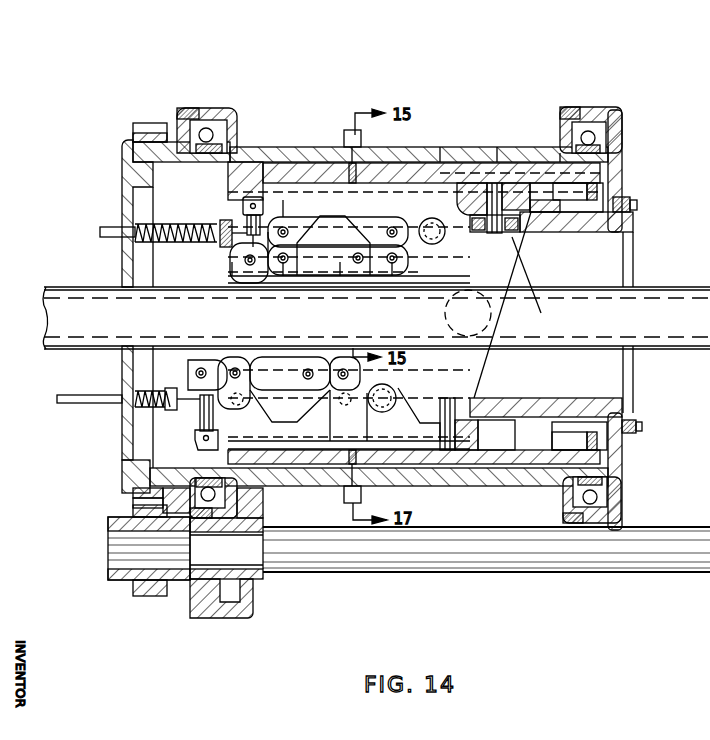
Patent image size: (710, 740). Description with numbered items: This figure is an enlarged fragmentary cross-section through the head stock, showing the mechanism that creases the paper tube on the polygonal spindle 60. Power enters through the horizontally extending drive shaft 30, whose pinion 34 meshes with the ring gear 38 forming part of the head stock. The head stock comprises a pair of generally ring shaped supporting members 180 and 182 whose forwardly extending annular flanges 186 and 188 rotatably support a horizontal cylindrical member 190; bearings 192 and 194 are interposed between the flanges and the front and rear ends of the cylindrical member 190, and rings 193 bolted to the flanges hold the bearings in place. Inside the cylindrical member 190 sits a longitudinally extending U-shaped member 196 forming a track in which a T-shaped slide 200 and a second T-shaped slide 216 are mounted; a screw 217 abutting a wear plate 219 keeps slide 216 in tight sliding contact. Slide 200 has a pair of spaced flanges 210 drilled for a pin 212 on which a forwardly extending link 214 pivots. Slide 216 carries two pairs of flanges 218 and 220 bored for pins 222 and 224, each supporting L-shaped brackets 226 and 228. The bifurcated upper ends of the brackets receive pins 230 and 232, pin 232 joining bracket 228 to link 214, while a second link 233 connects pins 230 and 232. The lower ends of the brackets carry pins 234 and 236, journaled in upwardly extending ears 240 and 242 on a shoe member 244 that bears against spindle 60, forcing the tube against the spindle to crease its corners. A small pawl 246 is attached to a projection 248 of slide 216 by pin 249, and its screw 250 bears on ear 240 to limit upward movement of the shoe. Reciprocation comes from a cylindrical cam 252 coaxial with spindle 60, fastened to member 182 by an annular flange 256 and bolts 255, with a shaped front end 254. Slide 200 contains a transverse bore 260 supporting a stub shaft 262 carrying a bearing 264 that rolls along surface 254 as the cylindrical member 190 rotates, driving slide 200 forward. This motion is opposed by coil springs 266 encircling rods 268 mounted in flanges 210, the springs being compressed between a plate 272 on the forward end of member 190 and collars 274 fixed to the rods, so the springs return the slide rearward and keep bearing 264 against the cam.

The drive shaft 30 is at (658, 536).
The pinion 34 is at (150, 600).
The ring gear 38 is at (140, 130).
The spindle 60 is at (637, 290).
The supporting member 180 is at (245, 150).
The supporting member 182 is at (622, 176).
The annular flange 186 is at (205, 118).
The annular flange 188 is at (604, 110).
The cylindrical member 190 is at (416, 148).
The bearing 192 is at (226, 108).
The rings 193 is at (172, 124).
The bearing 194 is at (622, 121).
The U-shaped member 196 is at (498, 150).
The T-shaped slide 200 is at (521, 165).
The flanges 210 is at (486, 232).
The pin 212 is at (462, 240).
The link 214 is at (456, 176).
The second T-shaped slide 216 is at (286, 214).
The screw 217 is at (355, 130).
The flanges 218 is at (298, 247).
The wear plate 219 is at (441, 150).
The flanges 220 is at (434, 245).
The pin 222 is at (282, 277).
The pin 224 is at (468, 313).
The L-shaped bracket 226 is at (260, 276).
The L-shaped bracket 228 is at (395, 268).
The pin 230 is at (286, 228).
The pin 232 is at (391, 229).
The second link 233 is at (345, 230).
The pin 234 is at (230, 283).
The pin 236 is at (360, 266).
The ear 240 is at (245, 263).
The ear 242 is at (286, 260).
The shoe member 244 is at (341, 277).
The pawl 246 is at (246, 219).
The projection 248 is at (245, 186).
The pin 249 is at (253, 197).
The screw 250 is at (243, 246).
The cylindrical cam 252 is at (560, 232).
The shaped front end 254 is at (486, 357).
The bolts 255 is at (634, 205).
The annular flange 256 is at (636, 231).
The transverse bore 260 is at (548, 198).
The stub shaft 262 is at (549, 231).
The bearing 264 is at (541, 310).
The coil springs 266 is at (170, 244).
The rods 268 is at (101, 231).
The plate 272 is at (122, 166).
The collars 274 is at (236, 240).